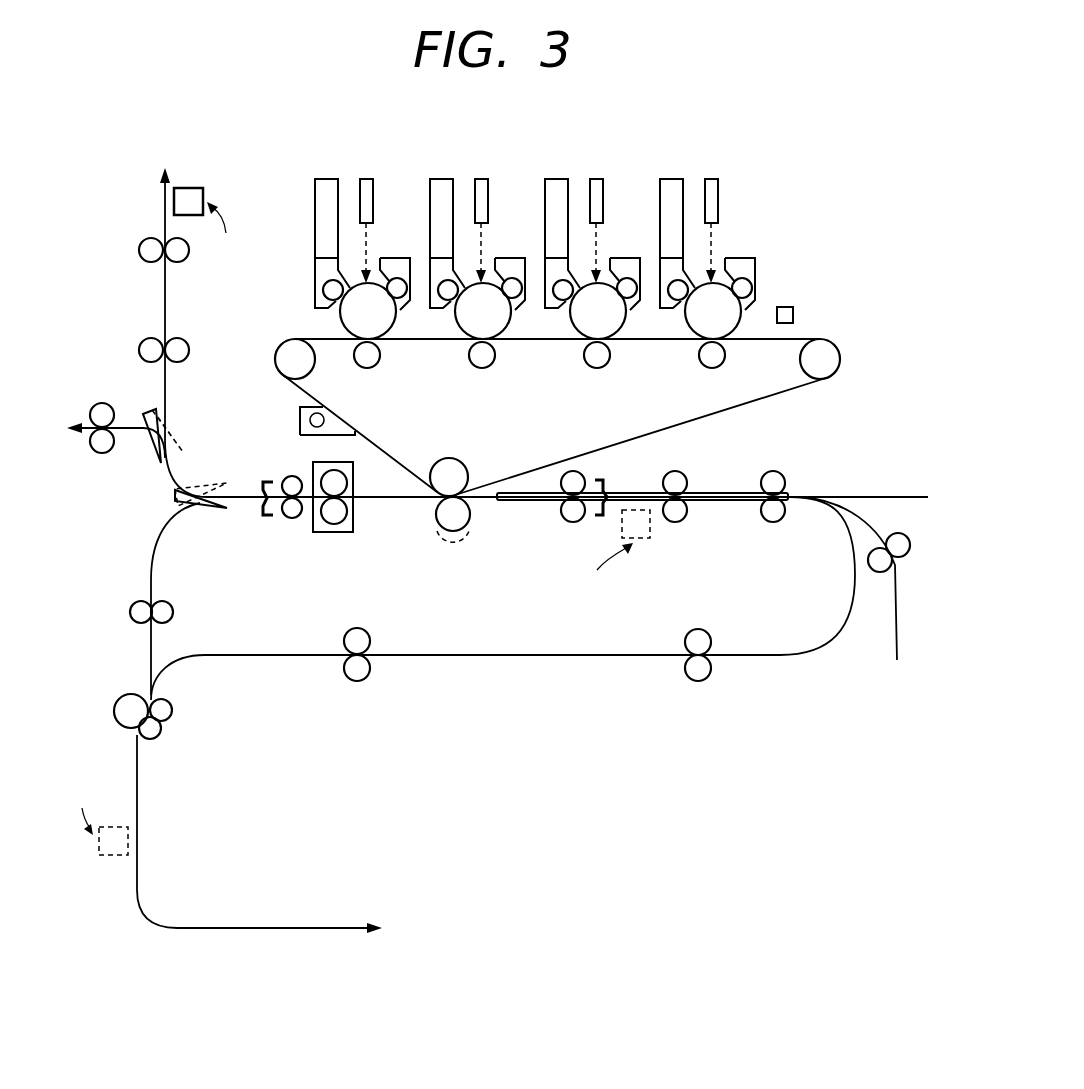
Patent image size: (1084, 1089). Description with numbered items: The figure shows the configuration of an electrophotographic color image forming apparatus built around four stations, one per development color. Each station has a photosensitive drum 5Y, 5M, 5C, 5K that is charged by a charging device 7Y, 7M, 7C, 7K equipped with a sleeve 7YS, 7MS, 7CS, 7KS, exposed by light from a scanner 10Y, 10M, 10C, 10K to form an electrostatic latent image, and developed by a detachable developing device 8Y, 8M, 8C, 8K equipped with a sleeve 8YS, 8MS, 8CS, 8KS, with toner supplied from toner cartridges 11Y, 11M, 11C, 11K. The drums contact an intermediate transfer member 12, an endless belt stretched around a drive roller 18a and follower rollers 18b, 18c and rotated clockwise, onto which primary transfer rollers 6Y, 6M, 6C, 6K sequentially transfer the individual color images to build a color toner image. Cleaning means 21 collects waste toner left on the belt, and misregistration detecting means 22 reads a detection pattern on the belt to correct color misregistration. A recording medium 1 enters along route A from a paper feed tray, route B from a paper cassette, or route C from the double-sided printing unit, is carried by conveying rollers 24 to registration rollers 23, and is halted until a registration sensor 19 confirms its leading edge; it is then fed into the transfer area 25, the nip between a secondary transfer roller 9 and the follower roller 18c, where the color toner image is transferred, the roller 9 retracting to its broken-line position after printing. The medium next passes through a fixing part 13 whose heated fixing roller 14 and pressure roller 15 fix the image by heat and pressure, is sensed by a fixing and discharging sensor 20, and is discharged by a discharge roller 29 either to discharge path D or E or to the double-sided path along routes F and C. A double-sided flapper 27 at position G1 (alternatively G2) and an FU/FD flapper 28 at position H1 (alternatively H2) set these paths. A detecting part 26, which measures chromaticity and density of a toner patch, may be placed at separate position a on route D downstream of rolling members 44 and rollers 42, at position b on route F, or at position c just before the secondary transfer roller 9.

The recording medium 1 is at (730, 501).
The photosensitive drum 5Y is at (355, 325).
The photosensitive drum 5M is at (470, 325).
The photosensitive drum 5C is at (585, 325).
The photosensitive drum 5K is at (700, 325).
The primary transfer roller 6Y is at (367, 368).
The primary transfer roller 6M is at (482, 368).
The primary transfer roller 6C is at (597, 368).
The primary transfer roller 6K is at (712, 368).
The charging device 7Y is at (391, 258).
The charging device 7M is at (506, 258).
The charging device 7C is at (621, 258).
The charging device 7K is at (733, 258).
The sleeve 7YS is at (397, 298).
The sleeve 7MS is at (512, 298).
The sleeve 7CS is at (627, 298).
The sleeve 7KS is at (752, 286).
The developing device 8Y is at (314, 278).
The developing device 8M is at (429, 278).
The developing device 8C is at (544, 278).
The developing device 8K is at (660, 278).
The sleeve 8YS is at (333, 300).
The sleeve 8MS is at (448, 300).
The sleeve 8CS is at (563, 300).
The sleeve 8KS is at (678, 300).
The secondary transfer roller 9 is at (470, 512).
The scanner 10Y is at (367, 178).
The scanner 10M is at (482, 178).
The scanner 10C is at (597, 178).
The scanner 10K is at (712, 178).
The toner cartridge 11Y is at (330, 178).
The toner cartridge 11M is at (445, 178).
The toner cartridge 11C is at (560, 178).
The toner cartridge 11K is at (675, 178).
The intermediate transfer member 12 is at (503, 478).
The fixing part 13 is at (312, 462).
The fixing roller 14 is at (348, 486).
The pressure roller 15 is at (350, 515).
The drive roller 18a is at (838, 350).
The follower roller 18b is at (276, 362).
The follower roller 18c is at (442, 462).
The registration sensor 19 is at (611, 478).
The fixing and discharging sensor 20 is at (262, 480).
The cleaning means 21 is at (313, 409).
The misregistration detecting means 22 is at (794, 312).
The registration rollers 23 is at (566, 524).
The conveying rollers 24 is at (681, 470).
The secondary transfer portion 25 is at (393, 500).
The detecting part 26 is at (190, 188).
The double-sided flapper 27 is at (172, 502).
The FU/FD flapper 28 is at (143, 412).
The discharge roller 29 is at (295, 518).
The rollers 42 is at (189, 253).
The rolling members 44 is at (188, 346).
The route A is at (567, 481).
The route B is at (860, 583).
The route C is at (503, 598).
The route D is at (182, 319).
The route E is at (114, 428).
The route F is at (248, 718).
The position G1 is at (211, 521).
The flapper position G2 is at (201, 483).
The position H1 is at (138, 461).
The flapper position H2 is at (179, 431).
The separate position a is at (221, 231).
The separate position b is at (83, 808).
The separate position c is at (611, 570).